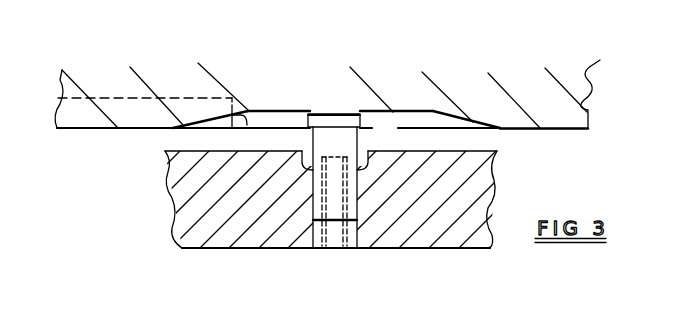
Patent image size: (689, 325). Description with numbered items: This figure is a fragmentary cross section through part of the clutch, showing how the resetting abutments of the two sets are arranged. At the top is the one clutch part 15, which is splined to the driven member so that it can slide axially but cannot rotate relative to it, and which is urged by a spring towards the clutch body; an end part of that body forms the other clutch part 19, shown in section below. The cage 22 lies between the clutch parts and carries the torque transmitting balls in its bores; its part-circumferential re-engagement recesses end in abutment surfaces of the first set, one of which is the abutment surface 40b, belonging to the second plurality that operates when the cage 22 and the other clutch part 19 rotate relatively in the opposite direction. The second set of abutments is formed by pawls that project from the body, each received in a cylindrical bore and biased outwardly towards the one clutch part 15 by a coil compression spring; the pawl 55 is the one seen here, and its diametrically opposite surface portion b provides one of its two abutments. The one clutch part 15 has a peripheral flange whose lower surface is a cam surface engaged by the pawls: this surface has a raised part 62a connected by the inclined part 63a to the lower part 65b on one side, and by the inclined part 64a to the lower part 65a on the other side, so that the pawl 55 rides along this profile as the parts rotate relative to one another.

The other clutch part 19 is at (428, 234).
The lower part 65b is at (75, 129).
The inclined part 63a is at (197, 121).
The raised part 62a is at (275, 110).
The abutment surface 40b is at (305, 146).
The pawl 55 is at (346, 139).
The surface portion b is at (306, 118).
The inclined part 64a is at (475, 121).
The cage 22 is at (447, 123).
The lower part 65a is at (540, 130).
The one clutch part 15 is at (604, 88).